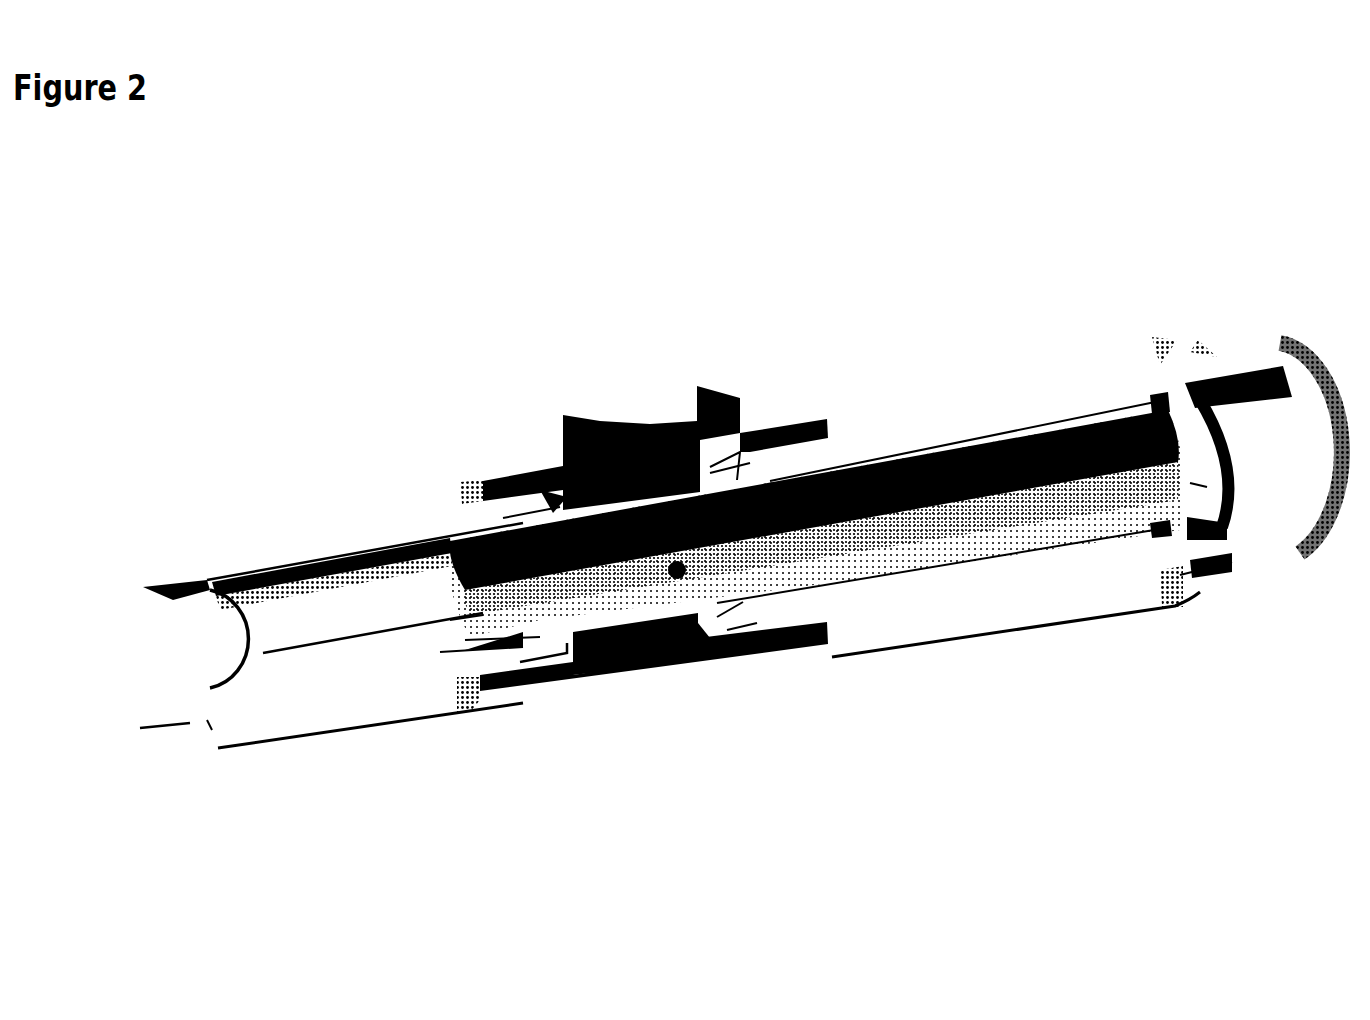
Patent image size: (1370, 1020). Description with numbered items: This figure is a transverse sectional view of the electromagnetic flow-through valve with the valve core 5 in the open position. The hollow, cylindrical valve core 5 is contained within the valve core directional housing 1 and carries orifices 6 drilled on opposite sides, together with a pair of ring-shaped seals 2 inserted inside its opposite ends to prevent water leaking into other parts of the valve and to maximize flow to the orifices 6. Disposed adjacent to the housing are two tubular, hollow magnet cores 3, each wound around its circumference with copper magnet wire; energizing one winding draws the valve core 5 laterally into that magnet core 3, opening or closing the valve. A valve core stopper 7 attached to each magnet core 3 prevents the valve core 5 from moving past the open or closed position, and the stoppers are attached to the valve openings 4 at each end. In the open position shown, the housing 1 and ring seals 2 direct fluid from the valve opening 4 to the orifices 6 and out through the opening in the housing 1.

The valve core directional housing 1 is at (655, 407).
The ring-shaped seals 2 is at (562, 470).
The magnet cores 3 is at (337, 490).
The valve opening 4 is at (1262, 483).
The valve core 5 is at (788, 538).
The orifices 6 is at (681, 563).
The valve core stopper 7 is at (205, 567).